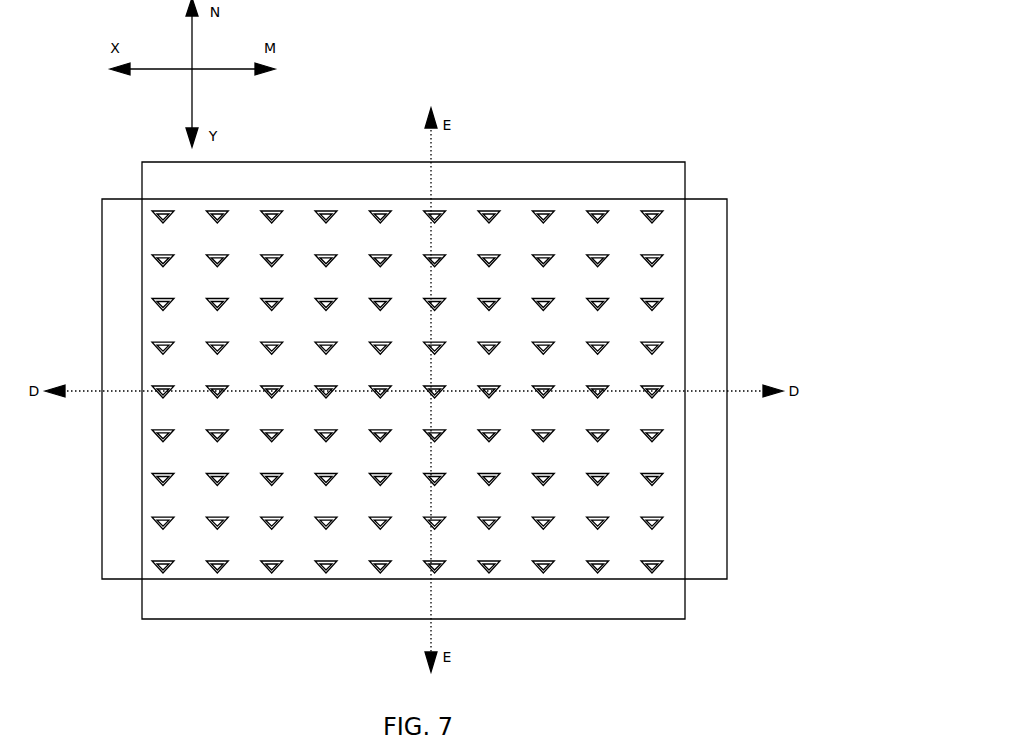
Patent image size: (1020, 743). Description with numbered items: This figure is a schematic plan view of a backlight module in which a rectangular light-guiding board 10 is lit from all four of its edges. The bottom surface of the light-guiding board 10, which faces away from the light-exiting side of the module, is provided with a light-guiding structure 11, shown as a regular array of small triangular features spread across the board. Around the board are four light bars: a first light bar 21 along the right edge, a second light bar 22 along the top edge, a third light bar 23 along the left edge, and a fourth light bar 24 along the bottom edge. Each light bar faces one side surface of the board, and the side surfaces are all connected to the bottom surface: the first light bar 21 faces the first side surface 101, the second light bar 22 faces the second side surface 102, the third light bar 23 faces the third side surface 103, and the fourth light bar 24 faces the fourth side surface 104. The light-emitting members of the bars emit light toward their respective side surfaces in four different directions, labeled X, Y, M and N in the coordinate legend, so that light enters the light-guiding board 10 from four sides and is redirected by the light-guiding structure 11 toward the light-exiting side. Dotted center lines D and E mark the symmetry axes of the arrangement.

The light-guiding board 10 is at (407, 349).
The light-guiding structure 11 is at (488, 220).
The first light bar 21 is at (707, 294).
The second light bar 22 is at (655, 180).
The third light bar 23 is at (123, 316).
The fourth light bar 24 is at (558, 600).
The first side surface 101 is at (688, 345).
The second side surface 102 is at (275, 195).
The third side surface 103 is at (140, 283).
The fourth side surface 104 is at (250, 580).